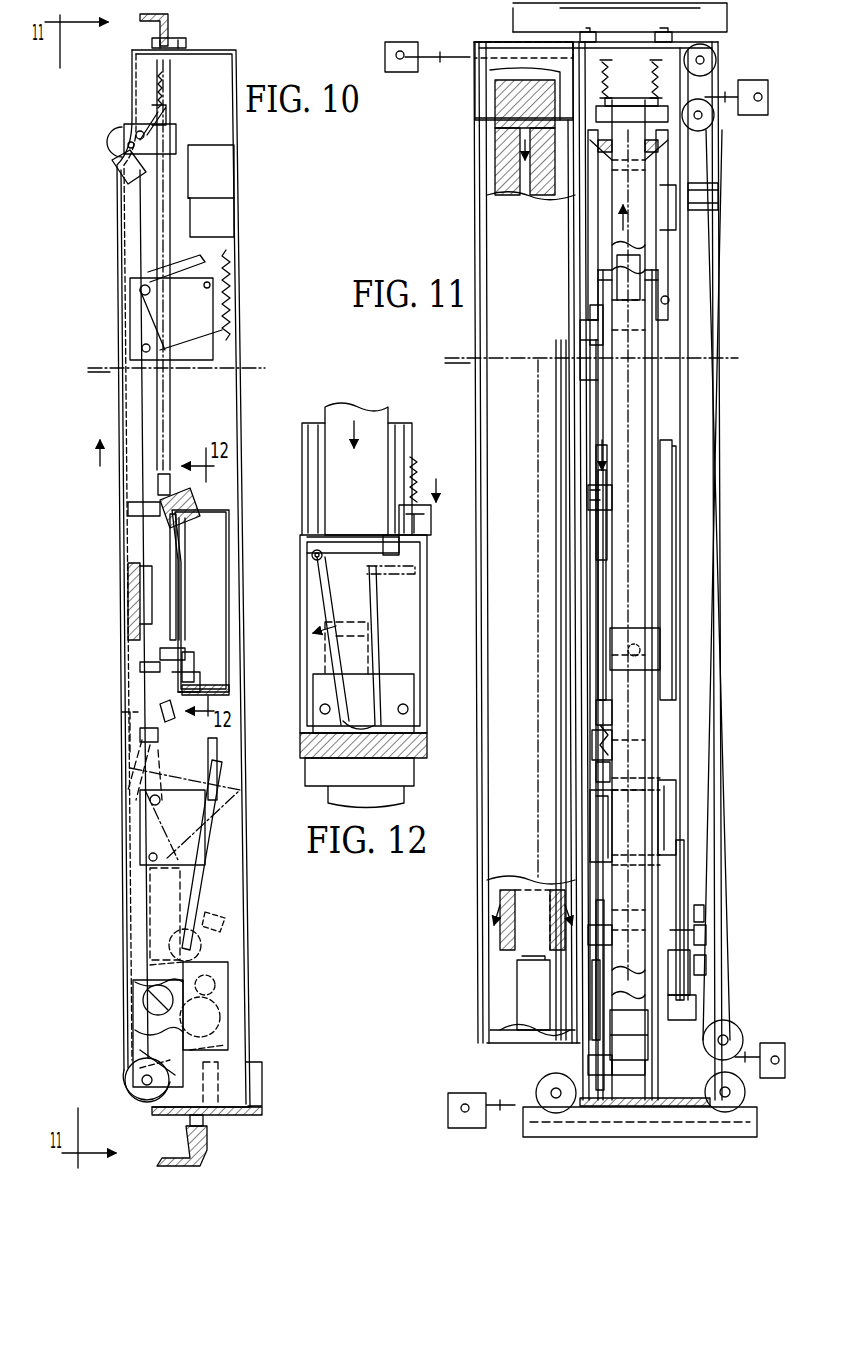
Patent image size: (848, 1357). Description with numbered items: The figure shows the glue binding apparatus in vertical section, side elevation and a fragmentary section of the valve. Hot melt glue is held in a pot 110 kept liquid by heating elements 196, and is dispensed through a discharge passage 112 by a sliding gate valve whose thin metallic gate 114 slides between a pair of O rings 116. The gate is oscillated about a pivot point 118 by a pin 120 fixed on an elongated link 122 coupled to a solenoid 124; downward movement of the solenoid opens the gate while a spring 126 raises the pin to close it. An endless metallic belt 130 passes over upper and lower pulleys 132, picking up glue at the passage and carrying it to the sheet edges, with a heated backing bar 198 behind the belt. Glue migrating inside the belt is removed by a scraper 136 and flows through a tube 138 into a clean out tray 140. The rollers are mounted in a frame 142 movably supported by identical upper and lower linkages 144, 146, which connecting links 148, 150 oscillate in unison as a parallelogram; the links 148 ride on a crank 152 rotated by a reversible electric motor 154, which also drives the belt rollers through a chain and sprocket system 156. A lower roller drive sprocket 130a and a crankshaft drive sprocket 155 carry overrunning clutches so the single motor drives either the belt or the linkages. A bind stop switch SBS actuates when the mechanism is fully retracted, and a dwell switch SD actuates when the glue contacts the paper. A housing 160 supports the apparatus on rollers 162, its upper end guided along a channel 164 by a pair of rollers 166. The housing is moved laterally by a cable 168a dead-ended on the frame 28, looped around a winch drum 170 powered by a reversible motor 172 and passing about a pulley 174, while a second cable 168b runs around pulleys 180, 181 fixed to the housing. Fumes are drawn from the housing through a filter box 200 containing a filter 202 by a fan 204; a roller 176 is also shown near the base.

In FIG. 10, the frame 28 is at (208, 1153).
In FIG. 11, the frame 28 is at (385, 48).
In FIG. 10, the pot 110 is at (230, 592).
In FIG. 12, the pot 110 is at (427, 660).
In FIG. 10, the discharge passage 112 is at (190, 655).
In FIG. 10, the gate 114 is at (190, 606).
In FIG. 12, the gate 114 is at (376, 615).
In FIG. 10, the O rings 116 is at (197, 670).
In FIG. 12, the O rings 116 is at (376, 718).
In FIG. 12, the pivot point 118 is at (321, 560).
In FIG. 10, the pin 120 is at (200, 512).
In FIG. 12, the pin 120 is at (428, 518).
In FIG. 11, the pin 120 is at (590, 490).
In FIG. 10, the elongated link 122 is at (134, 612).
In FIG. 11, the elongated link 122 is at (606, 564).
In FIG. 11, the solenoid 124 is at (582, 720).
In FIG. 12, the spring 126 is at (416, 458).
In FIG. 12, the endless metallic belt 130 is at (371, 476).
In FIG. 11, the endless metallic belt 130 is at (610, 215).
In FIG. 11, the lower roller drive sprocket 130a is at (556, 1093).
In FIG. 10, the pulleys 132 is at (118, 138).
In FIG. 11, the pulleys 132 is at (640, 66).
In FIG. 10, the scraper 136 is at (156, 712).
In FIG. 10, the tube 138 is at (146, 732).
In FIG. 10, the clean out tray 140 is at (262, 1082).
In FIG. 11, the frame 142 is at (620, 1110).
In FIG. 10, the upper linkage 144 is at (183, 372).
In FIG. 11, the upper linkage 144 is at (577, 310).
In FIG. 10, the lower linkage 146 is at (199, 839).
In FIG. 11, the lower linkage 146 is at (598, 824).
In FIG. 10, the connecting links 148 is at (206, 878).
In FIG. 11, the connecting links 148 is at (682, 872).
In FIG. 10, the connecting links 150 is at (202, 312).
In FIG. 11, the connecting links 150 is at (585, 427).
In FIG. 10, the crank 152 is at (170, 946).
In FIG. 11, the crank 152 is at (702, 936).
In FIG. 11, the reversible electric motor 154 is at (702, 960).
In FIG. 11, the crankshaft drive sprocket 155 is at (596, 912).
In FIG. 11, the chain and sprocket system 156 is at (560, 1042).
In FIG. 10, the housing 160 is at (246, 408).
In FIG. 10, the rollers 162 is at (206, 1120).
In FIG. 11, the rollers 162 is at (565, 1130).
In FIG. 10, the channel 164 is at (150, 28).
In FIG. 11, the channel 164 is at (515, 16).
In FIG. 10, the rollers 166 is at (186, 36).
In FIG. 11, the rollers 166 is at (596, 30).
In FIG. 11, the cable 168a is at (702, 314).
In FIG. 11, the second cable 168b is at (720, 398).
In FIG. 11, the winch drum 170 is at (720, 212).
In FIG. 10, the reversible motor 172 is at (232, 172).
In FIG. 11, the reversible motor 172 is at (582, 185).
In FIG. 11, the pulley 174 is at (708, 128).
In FIG. 11, the roller 176 is at (742, 1100).
In FIG. 11, the pulley 180 is at (736, 1012).
In FIG. 11, the pulley 181 is at (714, 52).
In FIG. 10, the heating elements 196 is at (230, 692).
In FIG. 10, the backing bar 198 is at (138, 448).
In FIG. 11, the backing bar 198 is at (610, 262).
In FIG. 11, the filter box 200 is at (470, 106).
In FIG. 11, the filter 202 is at (472, 180).
In FIG. 11, the fan 204 is at (500, 1046).
In FIG. 10, the bind stop switch SBS is at (238, 924).
In FIG. 11, the bind stop switch SBS is at (702, 906).
In FIG. 10, the dwell switch SD is at (132, 980).
In FIG. 11, the dwell switch SD is at (698, 966).